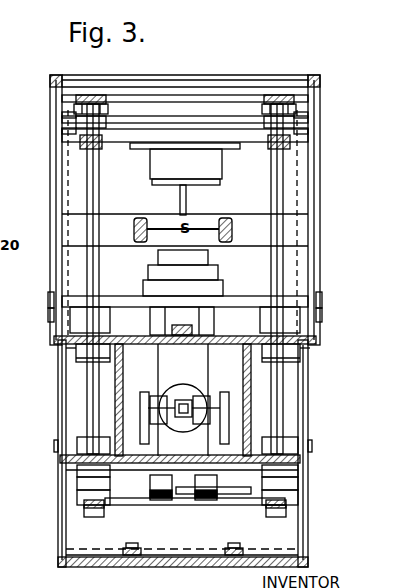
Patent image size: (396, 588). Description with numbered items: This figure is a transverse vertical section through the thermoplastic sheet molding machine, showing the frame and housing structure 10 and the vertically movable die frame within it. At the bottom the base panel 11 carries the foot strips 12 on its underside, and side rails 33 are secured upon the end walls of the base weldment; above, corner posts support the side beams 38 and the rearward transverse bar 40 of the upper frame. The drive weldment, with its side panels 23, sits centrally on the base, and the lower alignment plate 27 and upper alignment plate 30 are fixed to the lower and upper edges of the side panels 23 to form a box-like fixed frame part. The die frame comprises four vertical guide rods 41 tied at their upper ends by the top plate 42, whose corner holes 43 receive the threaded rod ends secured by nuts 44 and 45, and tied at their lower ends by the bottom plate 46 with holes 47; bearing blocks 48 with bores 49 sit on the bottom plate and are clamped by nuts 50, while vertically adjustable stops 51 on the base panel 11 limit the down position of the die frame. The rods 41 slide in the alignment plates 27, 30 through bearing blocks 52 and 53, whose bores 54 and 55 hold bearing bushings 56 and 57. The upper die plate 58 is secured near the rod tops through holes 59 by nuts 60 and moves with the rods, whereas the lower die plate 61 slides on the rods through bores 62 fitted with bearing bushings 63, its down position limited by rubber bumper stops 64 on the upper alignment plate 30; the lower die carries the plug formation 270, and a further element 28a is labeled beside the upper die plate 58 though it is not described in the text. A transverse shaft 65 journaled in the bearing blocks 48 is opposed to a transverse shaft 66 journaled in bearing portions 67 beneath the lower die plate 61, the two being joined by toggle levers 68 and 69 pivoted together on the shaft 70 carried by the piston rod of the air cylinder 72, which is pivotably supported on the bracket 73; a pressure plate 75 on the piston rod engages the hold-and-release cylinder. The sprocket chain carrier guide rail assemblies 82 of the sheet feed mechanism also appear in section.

The frame and housing structure 10 is at (343, 108).
The base panel 11 is at (186, 567).
The foot strips 12 is at (310, 562).
The side panels 23 is at (184, 400).
The lower alignment plate 27 is at (66, 474).
The motor bracket 28a is at (230, 168).
The upper alignment plate 30 is at (76, 352).
The side rails 33 is at (54, 446).
The side beams 38 is at (55, 80).
The rearward transverse bar 40 is at (258, 86).
The vertical guide rods 41 is at (99, 192).
The top plate 42 is at (178, 98).
The holes 43 is at (108, 100).
The nuts 44 is at (91, 97).
The nuts 45 is at (62, 117).
The bottom plate 46 is at (190, 506).
The holes 47 is at (106, 512).
The bearing blocks 48 is at (77, 497).
The bores 49 is at (66, 510).
The nuts 50 is at (298, 470).
The vertically adjustable stops 51 is at (132, 556).
The bearing block 52 is at (77, 440).
The bearing block 53 is at (88, 362).
The bore 54 is at (304, 412).
The bore 55 is at (54, 338).
The bearing bushing 56 is at (308, 390).
The bearing bushing 57 is at (70, 356).
The upper die plate 58 is at (222, 160).
The holes 59 is at (58, 150).
The nuts 60 is at (104, 122).
The lower die plate 61 is at (228, 312).
The bores 62 is at (48, 297).
The bearing bushings 63 is at (48, 314).
The bumper stops 64 is at (116, 304).
The transverse shaft 65 is at (240, 495).
The transverse shaft 66 is at (182, 324).
The bearing portions 67 is at (123, 352).
The toggle levers 68 is at (208, 448).
The toggle levers 69 is at (208, 368).
The shaft 70 is at (221, 418).
The air cylinder 72 is at (214, 392).
The bracket 73 is at (142, 430).
The pressure plate 75 is at (170, 396).
The sprocket chain carrier guide rail assemblies 82 is at (140, 218).
The plug formation 270 is at (208, 256).